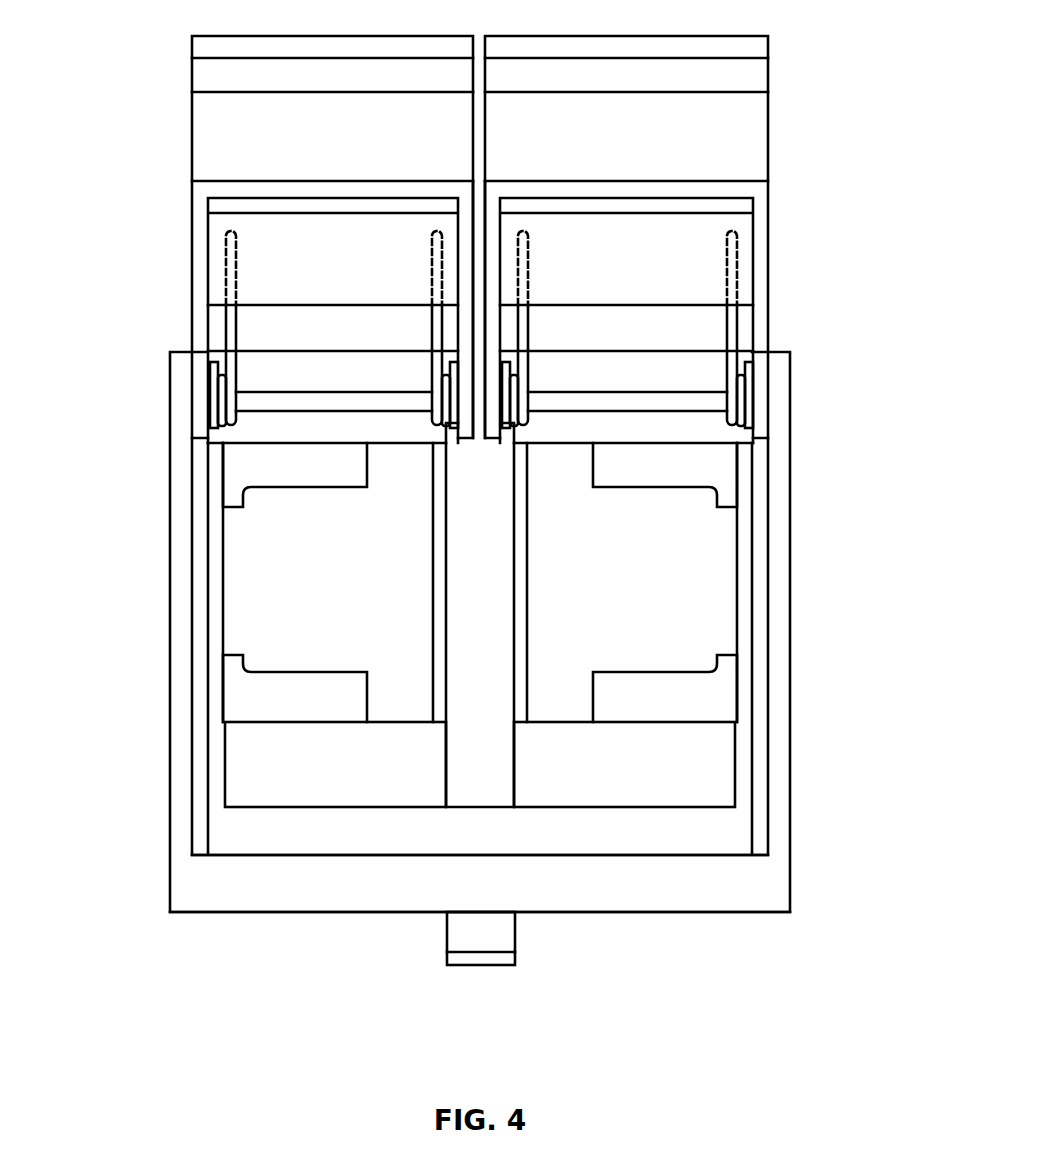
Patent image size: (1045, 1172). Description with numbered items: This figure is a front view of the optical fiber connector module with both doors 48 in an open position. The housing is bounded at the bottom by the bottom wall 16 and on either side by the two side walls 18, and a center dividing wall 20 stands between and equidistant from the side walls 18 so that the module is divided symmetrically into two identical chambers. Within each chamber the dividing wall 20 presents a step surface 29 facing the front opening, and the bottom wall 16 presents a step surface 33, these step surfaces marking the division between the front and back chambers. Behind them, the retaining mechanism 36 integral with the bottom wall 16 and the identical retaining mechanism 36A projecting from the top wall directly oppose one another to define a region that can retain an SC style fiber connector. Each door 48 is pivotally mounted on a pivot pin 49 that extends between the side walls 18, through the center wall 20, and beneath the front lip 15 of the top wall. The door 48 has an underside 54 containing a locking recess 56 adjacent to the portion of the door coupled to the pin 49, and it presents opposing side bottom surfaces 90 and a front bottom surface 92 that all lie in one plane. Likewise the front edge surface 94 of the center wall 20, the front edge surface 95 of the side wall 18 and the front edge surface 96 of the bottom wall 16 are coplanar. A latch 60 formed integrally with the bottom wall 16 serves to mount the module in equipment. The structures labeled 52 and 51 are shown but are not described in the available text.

The upper cover layer 52 is at (758, 73).
The door 48 is at (758, 143).
The front bottom surface 92 is at (258, 186).
The side bottom surfaces 90 is at (492, 228).
The center dividing wall 20 is at (480, 360).
The guide pin 51 is at (433, 268).
The underside 54 is at (283, 363).
The front lip 15 is at (303, 377).
The pivot pin 49 is at (398, 430).
The locking recess 56 is at (258, 393).
The front edge surface 94 is at (468, 591).
The step surface 29 is at (432, 604).
The step surface 33 is at (316, 781).
The retaining mechanism 36A is at (302, 473).
The SC fiber connector retaining mechanism 36 is at (275, 685).
The side walls 18 is at (778, 511).
The front edge surface 95 is at (765, 707).
The front edge surface 96 is at (554, 844).
The bottom wall 16 is at (584, 901).
The latch 60 is at (515, 930).